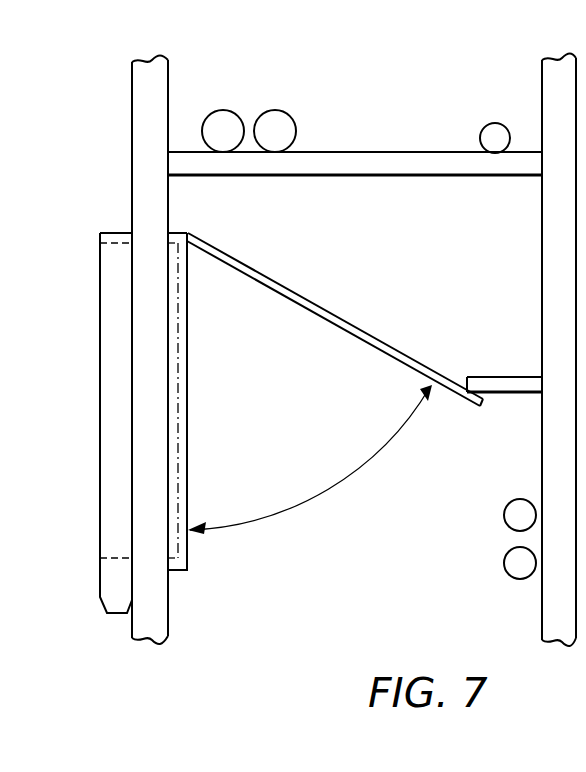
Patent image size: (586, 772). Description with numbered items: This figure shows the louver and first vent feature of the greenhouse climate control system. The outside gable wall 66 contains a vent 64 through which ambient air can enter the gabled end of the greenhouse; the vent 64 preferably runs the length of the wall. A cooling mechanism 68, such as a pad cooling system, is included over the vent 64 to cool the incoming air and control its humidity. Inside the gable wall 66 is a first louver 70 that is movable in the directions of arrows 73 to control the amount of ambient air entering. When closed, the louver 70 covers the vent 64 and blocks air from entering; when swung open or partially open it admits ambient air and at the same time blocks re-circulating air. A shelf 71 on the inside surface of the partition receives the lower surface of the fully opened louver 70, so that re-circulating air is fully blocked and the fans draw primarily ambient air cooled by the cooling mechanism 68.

The vent/opening 64 is at (148, 343).
The outside gable wall 66 is at (142, 163).
The cooling mechanism 68 is at (115, 288).
The first louver 70 is at (333, 300).
The shelf 71 is at (495, 376).
The arrows 73 is at (335, 484).